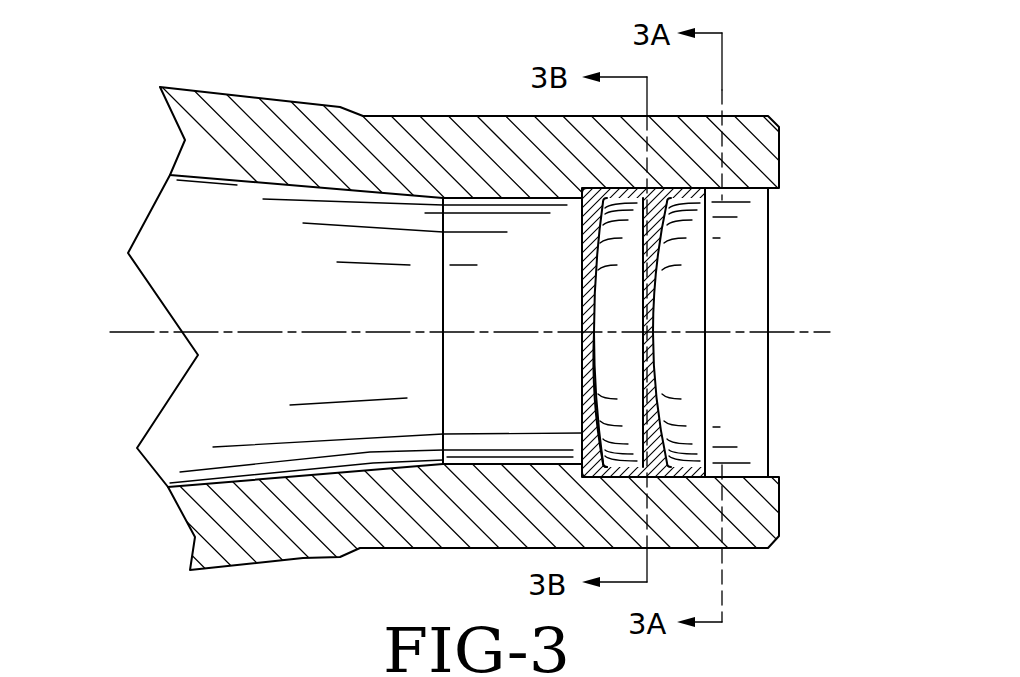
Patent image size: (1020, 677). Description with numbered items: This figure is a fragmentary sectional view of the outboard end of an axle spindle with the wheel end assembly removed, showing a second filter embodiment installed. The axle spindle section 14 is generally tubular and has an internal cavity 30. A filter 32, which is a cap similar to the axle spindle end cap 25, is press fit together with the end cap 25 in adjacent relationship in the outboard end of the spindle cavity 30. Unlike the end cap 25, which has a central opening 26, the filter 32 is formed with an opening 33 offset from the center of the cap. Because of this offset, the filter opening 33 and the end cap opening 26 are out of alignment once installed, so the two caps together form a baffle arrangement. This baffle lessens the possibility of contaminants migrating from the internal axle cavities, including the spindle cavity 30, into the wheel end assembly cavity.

The spindle section 14 is at (267, 127).
The internal cavity 30 is at (235, 183).
The filter 32 is at (567, 286).
The opening 33 is at (588, 410).
The central opening 26 is at (656, 331).
The end cap 25 is at (690, 372).